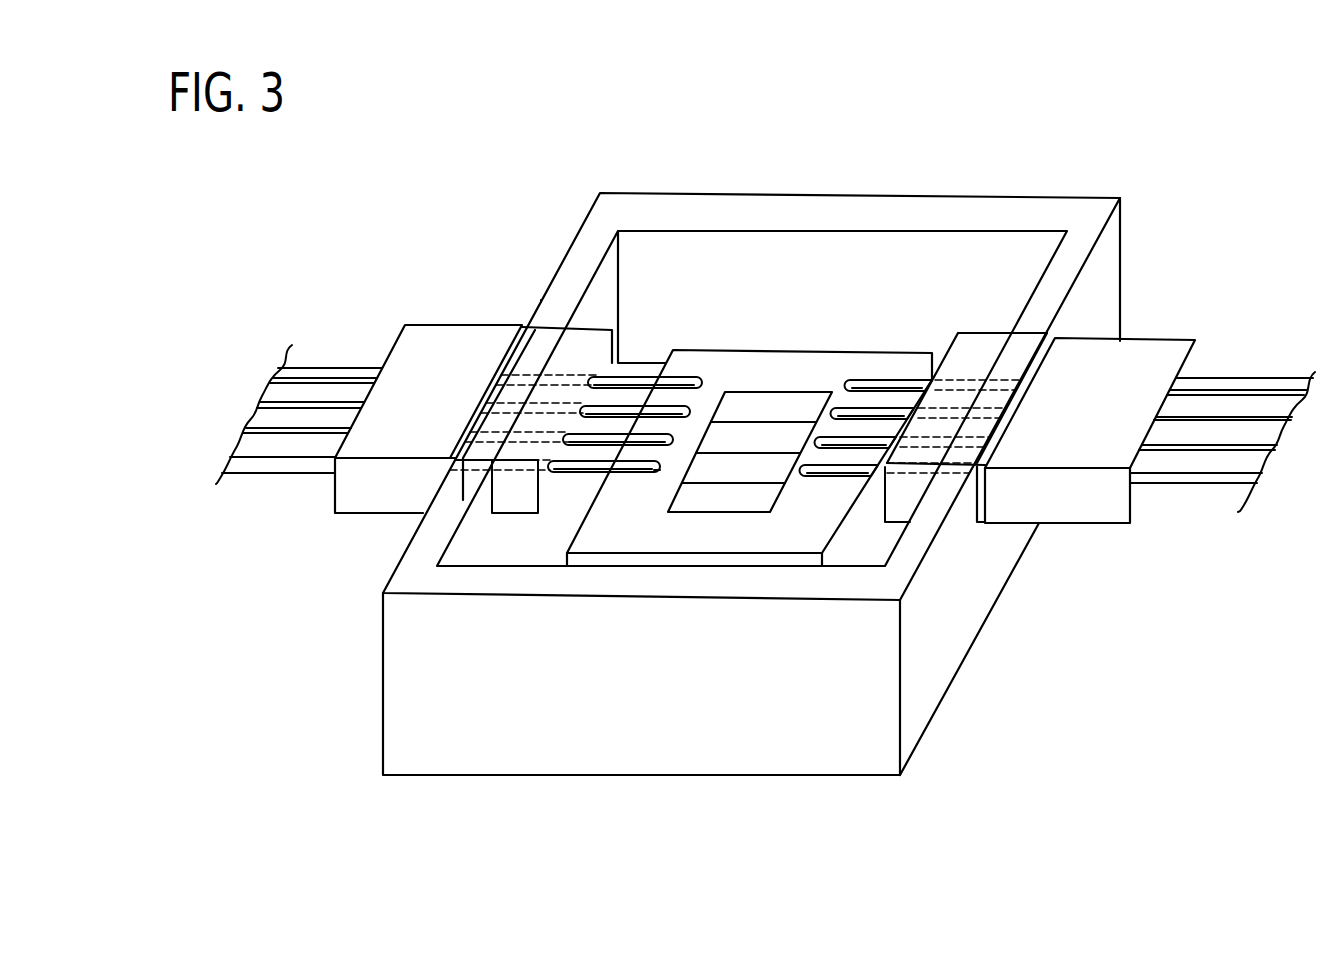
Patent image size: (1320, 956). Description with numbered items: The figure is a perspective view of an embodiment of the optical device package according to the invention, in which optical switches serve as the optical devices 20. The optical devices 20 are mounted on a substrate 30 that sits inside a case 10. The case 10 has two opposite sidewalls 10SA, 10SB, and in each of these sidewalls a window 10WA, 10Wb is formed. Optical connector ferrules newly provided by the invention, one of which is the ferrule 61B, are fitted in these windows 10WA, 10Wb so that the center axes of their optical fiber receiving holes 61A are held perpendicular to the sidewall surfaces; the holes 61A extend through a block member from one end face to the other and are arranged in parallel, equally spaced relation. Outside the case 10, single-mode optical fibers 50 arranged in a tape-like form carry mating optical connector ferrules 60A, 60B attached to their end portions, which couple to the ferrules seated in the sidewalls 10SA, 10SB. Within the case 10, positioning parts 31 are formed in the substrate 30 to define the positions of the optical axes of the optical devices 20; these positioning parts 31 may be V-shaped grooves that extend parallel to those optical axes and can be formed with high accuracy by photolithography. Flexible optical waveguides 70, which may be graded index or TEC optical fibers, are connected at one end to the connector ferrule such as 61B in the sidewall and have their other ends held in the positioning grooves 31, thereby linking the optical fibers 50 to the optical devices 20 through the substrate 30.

The case 10 is at (816, 195).
The sidewall 10SA is at (1108, 275).
The sidewall 10SB is at (541, 299).
The window 10WA is at (985, 470).
The window 10Wb is at (492, 465).
The optical devices 20 is at (808, 405).
The substrate 30 is at (727, 358).
The positioning parts 31 is at (660, 470).
The optical fibers 50 is at (331, 370).
The optical connector ferrule 60A is at (1102, 513).
The optical connector ferrule 60B is at (347, 507).
The optical fiber receiving holes 61A is at (562, 378).
The optical connector ferrule 61B is at (466, 446).
The flexible optical waveguides 70 is at (660, 377).